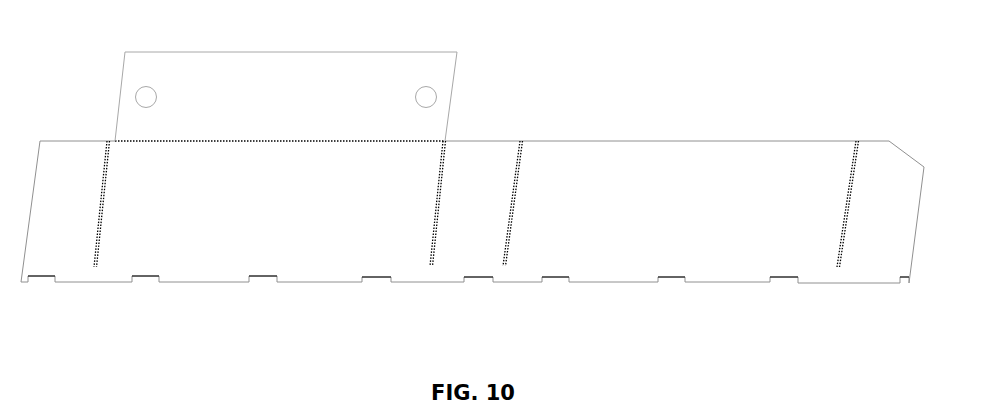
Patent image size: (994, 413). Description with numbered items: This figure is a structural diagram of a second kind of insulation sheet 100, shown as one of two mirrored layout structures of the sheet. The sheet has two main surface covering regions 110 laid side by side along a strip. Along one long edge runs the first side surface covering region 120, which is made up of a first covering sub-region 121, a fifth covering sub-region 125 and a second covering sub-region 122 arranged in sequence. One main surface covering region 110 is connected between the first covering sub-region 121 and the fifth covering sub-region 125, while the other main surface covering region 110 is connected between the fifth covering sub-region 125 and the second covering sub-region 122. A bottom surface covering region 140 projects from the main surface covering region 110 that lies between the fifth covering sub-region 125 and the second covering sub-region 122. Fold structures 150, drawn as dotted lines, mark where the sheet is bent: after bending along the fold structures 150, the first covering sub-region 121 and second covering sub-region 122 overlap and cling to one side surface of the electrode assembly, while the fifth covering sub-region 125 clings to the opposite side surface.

The insulation sheet 100 is at (94, 58).
The main surface covering region 110 is at (128, 158).
The first side surface covering region 120 is at (55, 317).
The first covering sub-region 121 is at (877, 262).
The second covering sub-region 122 is at (59, 260).
The fifth covering sub-region 125 is at (475, 254).
The bottom surface covering region 140 is at (327, 70).
The fold structures 150 is at (228, 140).